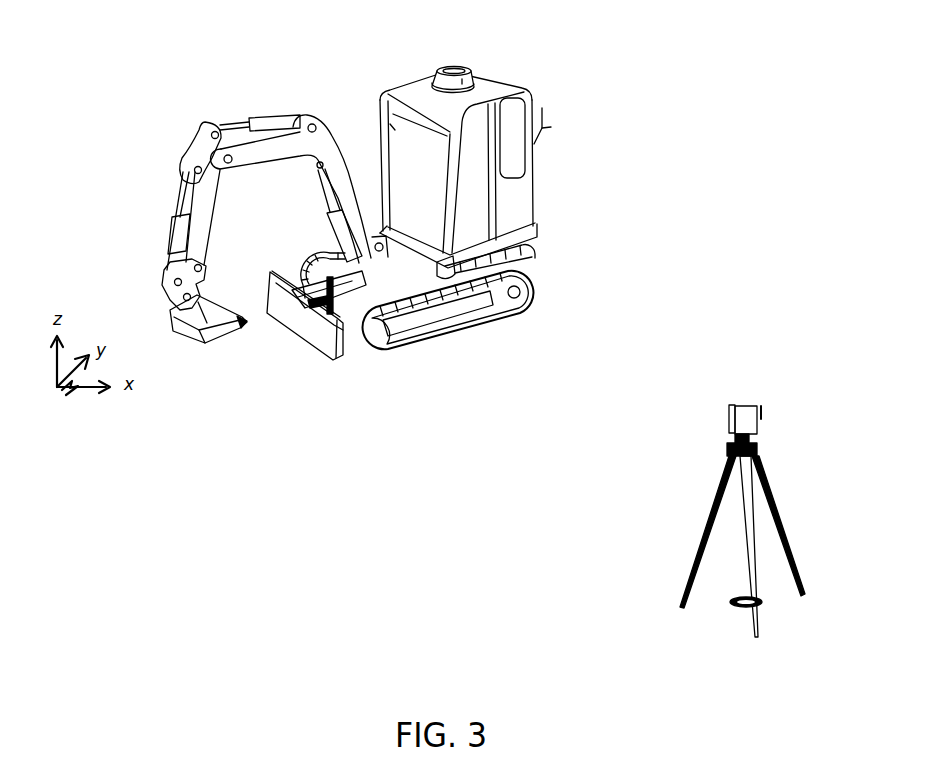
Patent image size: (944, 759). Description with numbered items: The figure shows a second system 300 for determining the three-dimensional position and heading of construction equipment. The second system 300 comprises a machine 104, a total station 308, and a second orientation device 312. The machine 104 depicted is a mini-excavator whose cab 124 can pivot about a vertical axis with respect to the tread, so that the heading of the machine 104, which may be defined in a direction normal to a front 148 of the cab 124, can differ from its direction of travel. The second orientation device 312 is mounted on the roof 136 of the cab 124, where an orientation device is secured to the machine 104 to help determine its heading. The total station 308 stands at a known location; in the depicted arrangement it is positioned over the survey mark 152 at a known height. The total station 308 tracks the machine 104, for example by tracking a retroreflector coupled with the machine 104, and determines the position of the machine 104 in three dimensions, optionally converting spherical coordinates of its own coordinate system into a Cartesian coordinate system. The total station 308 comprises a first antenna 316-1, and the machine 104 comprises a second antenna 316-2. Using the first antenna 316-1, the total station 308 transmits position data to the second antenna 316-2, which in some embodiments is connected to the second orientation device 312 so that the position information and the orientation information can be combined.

The second system 300 is at (775, 68).
The machine 104 is at (534, 230).
The cab 124 is at (521, 210).
The roof 136 is at (480, 92).
The second orientation device 312 is at (455, 66).
The front 148 is at (398, 133).
The second antenna 316-2 is at (548, 121).
The total station 308 is at (749, 405).
The first antenna 316-1 is at (763, 421).
The survey mark 152 is at (731, 603).